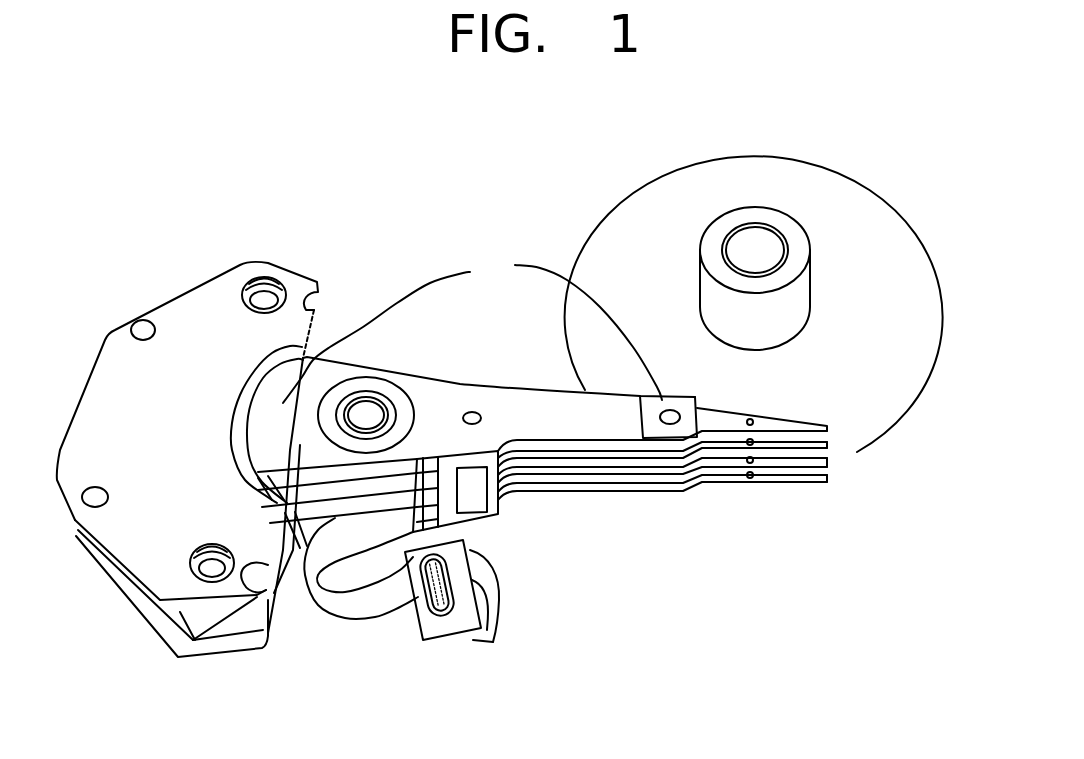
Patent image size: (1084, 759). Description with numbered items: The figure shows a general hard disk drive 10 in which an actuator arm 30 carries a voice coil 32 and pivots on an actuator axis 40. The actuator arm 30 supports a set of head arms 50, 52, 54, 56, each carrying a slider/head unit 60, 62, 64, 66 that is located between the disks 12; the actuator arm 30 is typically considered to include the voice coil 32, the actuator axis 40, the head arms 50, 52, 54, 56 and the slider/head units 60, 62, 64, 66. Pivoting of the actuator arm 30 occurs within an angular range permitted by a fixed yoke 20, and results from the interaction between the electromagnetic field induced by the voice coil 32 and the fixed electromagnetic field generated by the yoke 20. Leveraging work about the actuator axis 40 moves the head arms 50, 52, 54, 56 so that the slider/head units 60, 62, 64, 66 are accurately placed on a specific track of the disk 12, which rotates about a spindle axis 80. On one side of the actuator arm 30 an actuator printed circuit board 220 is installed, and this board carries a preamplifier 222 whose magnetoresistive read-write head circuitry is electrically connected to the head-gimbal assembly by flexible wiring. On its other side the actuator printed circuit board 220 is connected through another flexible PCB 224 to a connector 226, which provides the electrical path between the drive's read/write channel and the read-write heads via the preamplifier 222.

The hard disk drive 10 is at (397, 205).
The disk 12 is at (857, 204).
The yoke 20 is at (200, 315).
The actuator arm 30 is at (457, 397).
The voice coil 32 is at (267, 428).
The actuator axis 40 is at (370, 403).
The head arm 50 is at (572, 403).
The head arm 52 is at (633, 458).
The head arm 54 is at (603, 473).
The head arm 56 is at (587, 493).
The slider/head unit 60 is at (797, 418).
The slider/head unit 62 is at (828, 458).
The slider/head unit 64 is at (823, 470).
The slider/head unit 66 is at (788, 472).
The spindle axis 80 is at (800, 297).
The actuator printed circuit board 220 is at (480, 518).
The preamplifier 222 is at (472, 483).
The flexible PCB 224 is at (353, 607).
The connector 226 is at (473, 630).